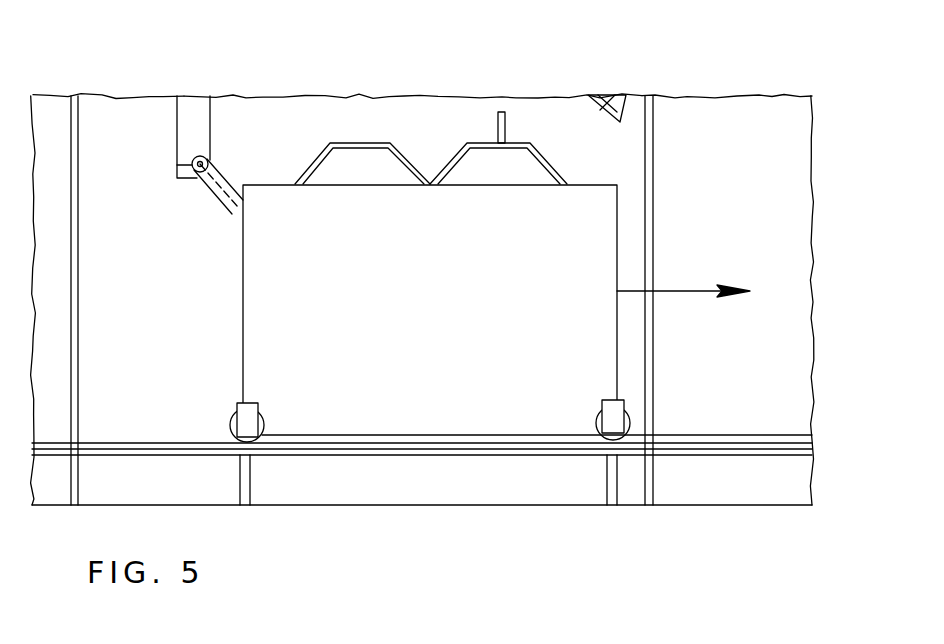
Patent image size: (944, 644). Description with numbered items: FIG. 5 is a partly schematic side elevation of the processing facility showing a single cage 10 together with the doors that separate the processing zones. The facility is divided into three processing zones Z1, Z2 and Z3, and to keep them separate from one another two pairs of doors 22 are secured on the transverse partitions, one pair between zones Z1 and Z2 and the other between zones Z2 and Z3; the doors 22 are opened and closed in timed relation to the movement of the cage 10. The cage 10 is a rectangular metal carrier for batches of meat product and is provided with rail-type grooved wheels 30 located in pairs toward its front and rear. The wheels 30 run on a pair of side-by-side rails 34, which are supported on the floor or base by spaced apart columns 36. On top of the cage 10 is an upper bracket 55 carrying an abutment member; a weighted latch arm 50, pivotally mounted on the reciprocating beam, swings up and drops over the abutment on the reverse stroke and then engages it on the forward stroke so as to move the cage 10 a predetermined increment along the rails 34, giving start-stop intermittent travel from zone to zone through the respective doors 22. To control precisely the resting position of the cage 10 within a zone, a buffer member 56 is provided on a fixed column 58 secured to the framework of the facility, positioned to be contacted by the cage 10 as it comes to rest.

The first processing zone Z1 is at (52, 84).
The second processing zone Z2 is at (415, 82).
The third processing zone Z3 is at (723, 82).
The cage 10 is at (216, 331).
The doors 22 is at (80, 168).
The rail-type grooved wheels 30 is at (263, 422).
The rails 34 is at (695, 445).
The columns 36 is at (252, 487).
The latch arm 50 is at (625, 92).
The upper bracket 55 is at (548, 155).
The buffer member 56 is at (222, 180).
The fixed column 58 is at (195, 133).